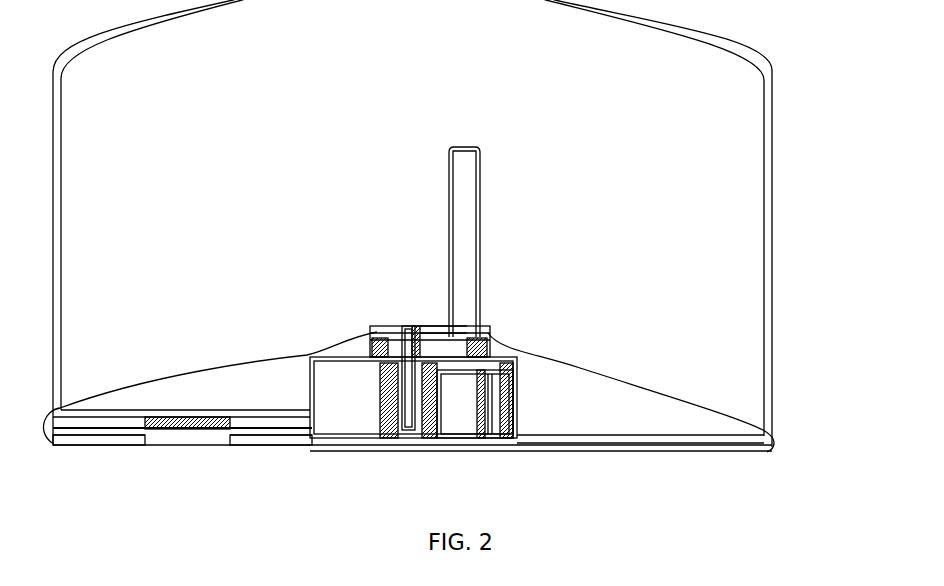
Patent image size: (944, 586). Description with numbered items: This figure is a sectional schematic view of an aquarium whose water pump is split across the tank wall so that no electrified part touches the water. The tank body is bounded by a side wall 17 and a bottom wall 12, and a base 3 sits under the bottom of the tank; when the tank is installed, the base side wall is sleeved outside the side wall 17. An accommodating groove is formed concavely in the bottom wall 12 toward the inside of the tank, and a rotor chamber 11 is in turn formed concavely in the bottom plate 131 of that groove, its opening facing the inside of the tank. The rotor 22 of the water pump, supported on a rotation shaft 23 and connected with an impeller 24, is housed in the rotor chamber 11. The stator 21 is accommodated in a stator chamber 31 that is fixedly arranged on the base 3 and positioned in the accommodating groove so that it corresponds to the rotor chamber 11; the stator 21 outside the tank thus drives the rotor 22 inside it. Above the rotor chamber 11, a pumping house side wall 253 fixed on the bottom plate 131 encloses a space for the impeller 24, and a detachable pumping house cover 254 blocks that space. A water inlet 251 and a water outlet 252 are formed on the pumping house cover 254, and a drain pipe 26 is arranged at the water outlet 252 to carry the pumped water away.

The base 3 is at (778, 421).
The rotor chamber 11 is at (397, 438).
The bottom wall 12 is at (713, 426).
The bottom plate 131 is at (333, 357).
The side wall 17 is at (748, 207).
The stator 21 is at (460, 397).
The rotor 22 is at (437, 402).
The rotation shaft 23 is at (427, 437).
The impeller 24 is at (387, 343).
The water inlet 251 is at (430, 327).
The water outlet 252 is at (472, 330).
The pumping house side wall 253 is at (377, 335).
The pumping house cover 254 is at (411, 325).
The drain pipe 26 is at (470, 190).
The stator chamber 31 is at (497, 367).